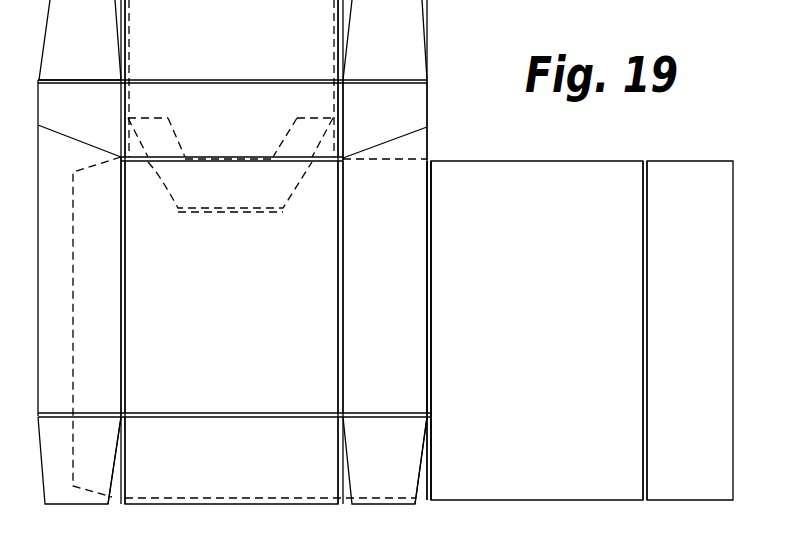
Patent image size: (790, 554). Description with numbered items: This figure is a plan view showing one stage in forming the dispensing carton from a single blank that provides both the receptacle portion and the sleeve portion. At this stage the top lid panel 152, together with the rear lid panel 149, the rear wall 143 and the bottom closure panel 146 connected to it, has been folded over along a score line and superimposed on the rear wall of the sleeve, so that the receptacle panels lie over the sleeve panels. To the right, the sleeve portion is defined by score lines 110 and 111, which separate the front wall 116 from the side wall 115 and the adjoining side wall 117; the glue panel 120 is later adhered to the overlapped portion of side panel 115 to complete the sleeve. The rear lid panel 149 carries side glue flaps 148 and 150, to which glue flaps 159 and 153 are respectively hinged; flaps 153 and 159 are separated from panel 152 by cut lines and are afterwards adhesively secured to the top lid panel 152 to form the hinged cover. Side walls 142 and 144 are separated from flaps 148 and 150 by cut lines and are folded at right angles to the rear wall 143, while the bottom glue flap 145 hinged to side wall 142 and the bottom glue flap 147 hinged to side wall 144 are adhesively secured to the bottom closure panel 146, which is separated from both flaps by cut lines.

The score line 110 is at (643, 375).
The score line 111 is at (428, 352).
The side wall 115 is at (669, 341).
The front wall 116 is at (543, 321).
The side wall 117 is at (422, 493).
The glue panel 120 is at (113, 487).
The side wall 142 is at (360, 303).
The rear wall 143 is at (203, 304).
The side wall 144 is at (76, 281).
The bottom glue flap 145 is at (360, 469).
The bottom closure panel 146 is at (230, 469).
The bottom glue flap 147 is at (52, 475).
The side glue flap 148 is at (366, 121).
The rear lid panel 149 is at (215, 131).
The side glue flap 150 is at (60, 121).
The top lid panel 152 is at (216, 51).
The glue flap 153 is at (60, 54).
The glue flap 159 is at (368, 51).